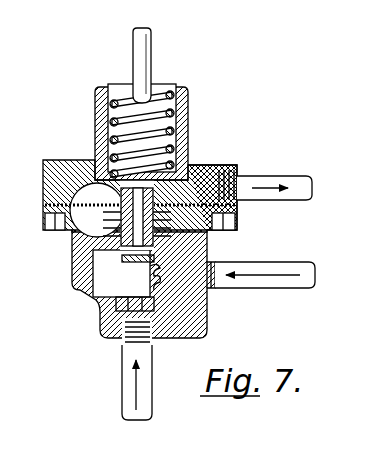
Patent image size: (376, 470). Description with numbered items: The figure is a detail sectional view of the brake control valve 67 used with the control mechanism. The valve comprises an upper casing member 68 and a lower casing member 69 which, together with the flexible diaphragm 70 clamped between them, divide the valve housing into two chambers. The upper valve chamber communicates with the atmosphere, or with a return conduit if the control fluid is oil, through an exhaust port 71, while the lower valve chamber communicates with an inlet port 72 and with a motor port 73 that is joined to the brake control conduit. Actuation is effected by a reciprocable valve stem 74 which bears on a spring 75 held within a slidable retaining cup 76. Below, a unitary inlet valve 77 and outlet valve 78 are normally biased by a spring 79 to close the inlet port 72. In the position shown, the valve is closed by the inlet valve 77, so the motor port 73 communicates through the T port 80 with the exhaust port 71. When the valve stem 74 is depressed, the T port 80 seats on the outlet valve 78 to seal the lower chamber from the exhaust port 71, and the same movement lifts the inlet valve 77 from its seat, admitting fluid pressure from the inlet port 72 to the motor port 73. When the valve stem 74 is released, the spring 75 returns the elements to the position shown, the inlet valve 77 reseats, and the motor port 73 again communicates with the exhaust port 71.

The brake control valve 67 is at (256, 112).
The upper casing member 68 is at (46, 166).
The lower casing member 69 is at (75, 282).
The flexible diaphragm 70 is at (97, 210).
The exhaust port 71 is at (272, 200).
The inlet port 72 is at (119, 378).
The motor port 73 is at (262, 290).
The reciprocable valve stem 74 is at (151, 60).
The spring 75 is at (176, 132).
The slidable retaining cup 76 is at (166, 92).
The inlet valve 77 is at (116, 303).
The outlet valve 78 is at (124, 260).
The spring 79 is at (150, 277).
The T port 80 is at (60, 193).